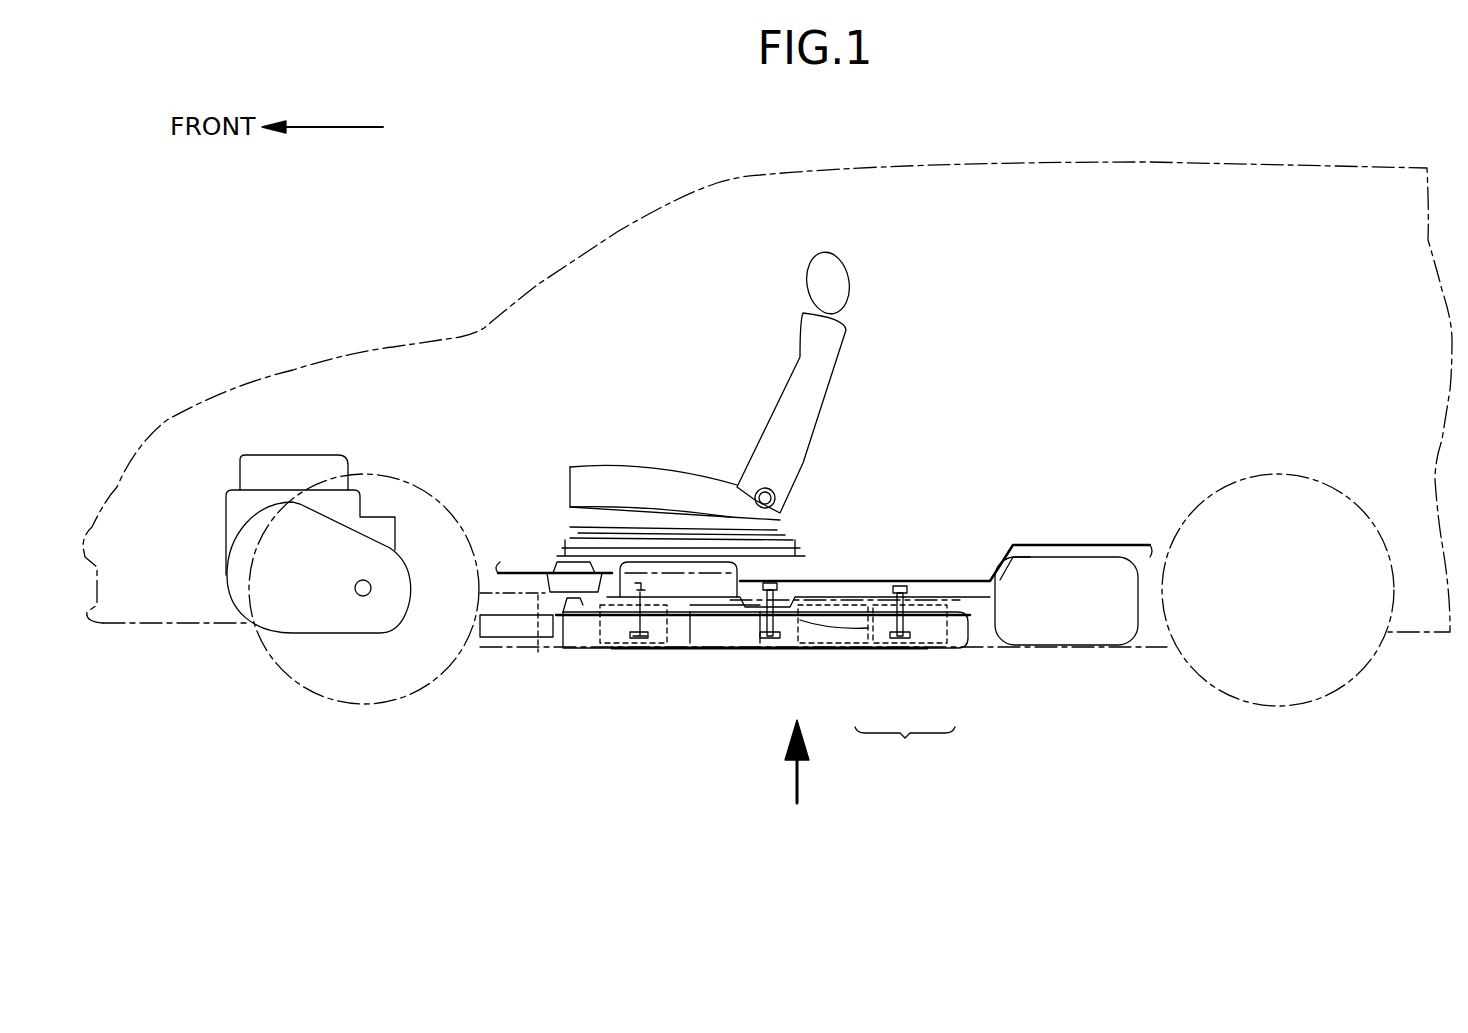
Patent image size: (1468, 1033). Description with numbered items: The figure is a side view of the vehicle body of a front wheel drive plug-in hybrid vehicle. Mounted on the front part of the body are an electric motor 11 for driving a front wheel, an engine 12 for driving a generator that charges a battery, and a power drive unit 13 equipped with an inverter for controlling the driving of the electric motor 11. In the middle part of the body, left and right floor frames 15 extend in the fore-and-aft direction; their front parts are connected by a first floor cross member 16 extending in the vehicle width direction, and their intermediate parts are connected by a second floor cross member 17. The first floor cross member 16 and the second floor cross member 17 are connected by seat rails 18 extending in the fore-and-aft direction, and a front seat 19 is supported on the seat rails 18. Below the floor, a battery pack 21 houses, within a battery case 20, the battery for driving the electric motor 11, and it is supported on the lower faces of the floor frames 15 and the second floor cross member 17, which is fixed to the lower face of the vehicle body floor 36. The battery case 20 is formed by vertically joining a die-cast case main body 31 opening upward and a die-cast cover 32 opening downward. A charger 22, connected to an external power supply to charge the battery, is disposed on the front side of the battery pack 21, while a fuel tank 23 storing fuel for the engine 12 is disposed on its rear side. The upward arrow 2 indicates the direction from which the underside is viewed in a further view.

The arrow 2 is at (795, 787).
The electric motor 11 is at (242, 577).
The engine 12 is at (235, 513).
The power drive unit 13 is at (247, 470).
The floor frame 15 is at (539, 652).
The first floor cross member 16 is at (532, 598).
The second floor cross member 17 is at (793, 590).
The seat rail 18 is at (627, 555).
The front seat 19 is at (745, 423).
The battery case 20 is at (905, 747).
The battery pack 21 is at (712, 659).
The charger 22 is at (507, 640).
The fuel tank 23 is at (1067, 623).
The case main body 31 is at (832, 643).
The cover 32 is at (948, 644).
The vehicle body floor 36 is at (878, 580).